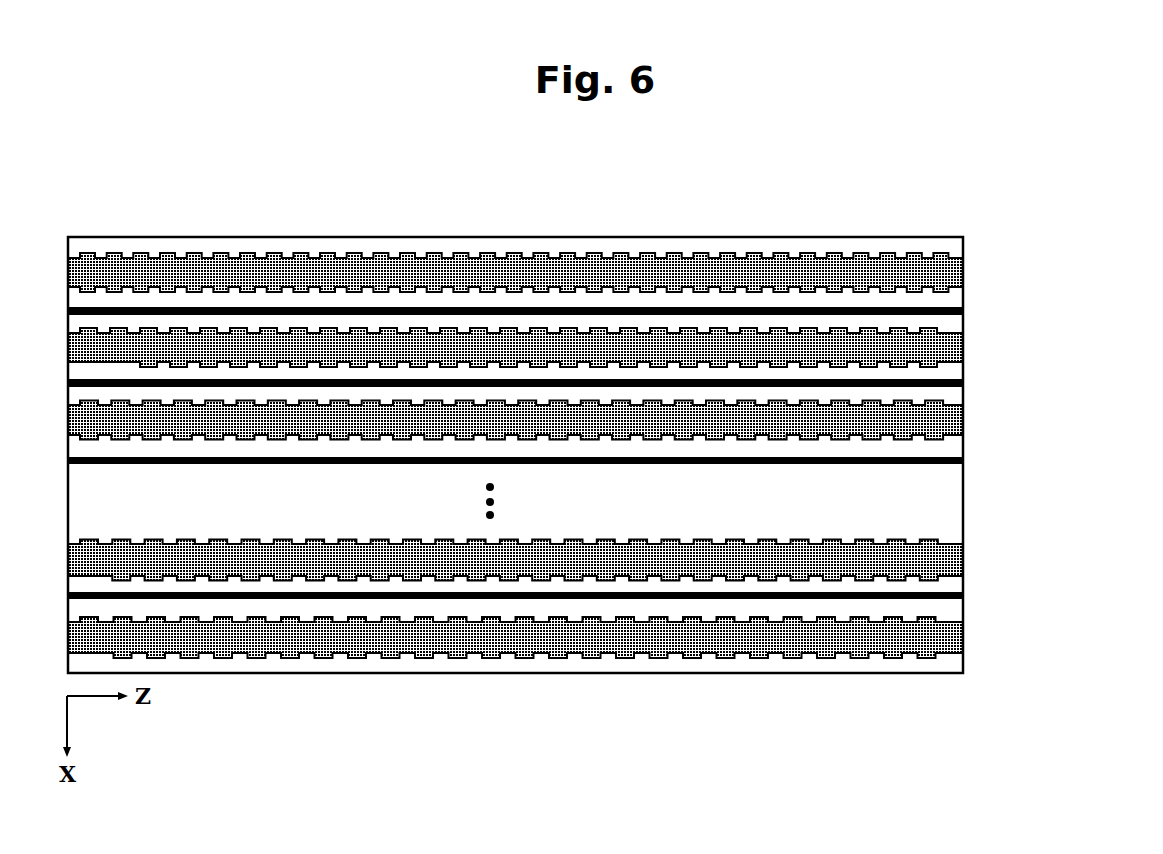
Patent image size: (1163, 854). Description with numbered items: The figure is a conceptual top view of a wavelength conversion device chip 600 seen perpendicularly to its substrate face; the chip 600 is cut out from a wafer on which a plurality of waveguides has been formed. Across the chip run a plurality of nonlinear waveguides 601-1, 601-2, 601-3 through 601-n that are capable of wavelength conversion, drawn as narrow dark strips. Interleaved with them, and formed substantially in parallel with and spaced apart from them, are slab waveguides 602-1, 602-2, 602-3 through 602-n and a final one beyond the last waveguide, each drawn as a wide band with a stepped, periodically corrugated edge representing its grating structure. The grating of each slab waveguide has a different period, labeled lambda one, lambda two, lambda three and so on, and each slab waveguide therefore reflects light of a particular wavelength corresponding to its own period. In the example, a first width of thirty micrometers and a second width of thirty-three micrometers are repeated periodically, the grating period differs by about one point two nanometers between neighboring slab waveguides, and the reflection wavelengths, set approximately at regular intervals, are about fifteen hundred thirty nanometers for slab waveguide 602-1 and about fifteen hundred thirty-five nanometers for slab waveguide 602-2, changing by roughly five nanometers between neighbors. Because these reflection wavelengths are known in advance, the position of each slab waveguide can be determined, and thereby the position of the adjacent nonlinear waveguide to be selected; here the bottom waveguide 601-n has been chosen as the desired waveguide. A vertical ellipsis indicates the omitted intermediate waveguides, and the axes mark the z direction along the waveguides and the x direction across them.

The wavelength conversion device chip 600 is at (508, 228).
The slab waveguide 602-1 is at (956, 270).
The waveguide 601-1 is at (956, 308).
The slab waveguide 602-2 is at (956, 346).
The waveguide 601-2 is at (956, 382).
The slab waveguide 602-3 is at (956, 420).
The waveguide 601-3 is at (956, 459).
The slab waveguide 602-n is at (956, 556).
The waveguide 601-n is at (956, 594).